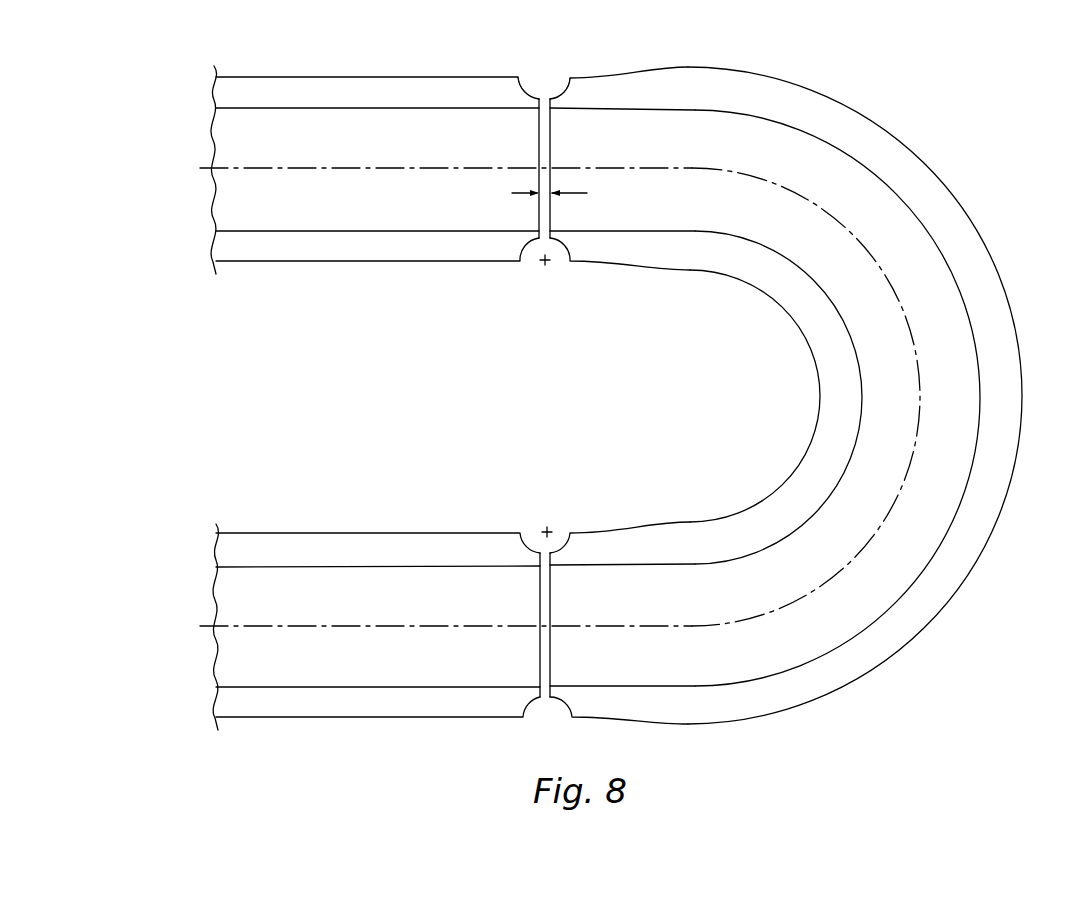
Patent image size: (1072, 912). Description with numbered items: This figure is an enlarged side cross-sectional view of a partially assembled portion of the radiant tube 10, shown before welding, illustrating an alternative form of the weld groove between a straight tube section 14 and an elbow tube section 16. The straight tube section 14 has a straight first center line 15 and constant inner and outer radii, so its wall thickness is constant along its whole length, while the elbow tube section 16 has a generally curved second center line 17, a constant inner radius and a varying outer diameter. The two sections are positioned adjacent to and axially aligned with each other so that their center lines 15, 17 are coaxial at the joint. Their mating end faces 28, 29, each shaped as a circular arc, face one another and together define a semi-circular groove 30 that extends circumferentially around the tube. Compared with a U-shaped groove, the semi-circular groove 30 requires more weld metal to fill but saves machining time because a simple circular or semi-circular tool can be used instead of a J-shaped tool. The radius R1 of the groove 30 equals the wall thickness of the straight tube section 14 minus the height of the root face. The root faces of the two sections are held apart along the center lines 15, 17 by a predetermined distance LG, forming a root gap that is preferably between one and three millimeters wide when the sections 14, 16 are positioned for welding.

The radiant tube 10 is at (875, 386).
The straight tube section 14 is at (333, 75).
The first center line 15 is at (227, 171).
The elbow tube section 16 is at (1008, 277).
The second center line 17 is at (921, 442).
The mating end face 28 is at (528, 76).
The mating end face 29 is at (558, 78).
The semi-circular groove 30 is at (544, 88).
The predetermined distance LG is at (551, 181).
The radius of the groove R1 is at (536, 542).